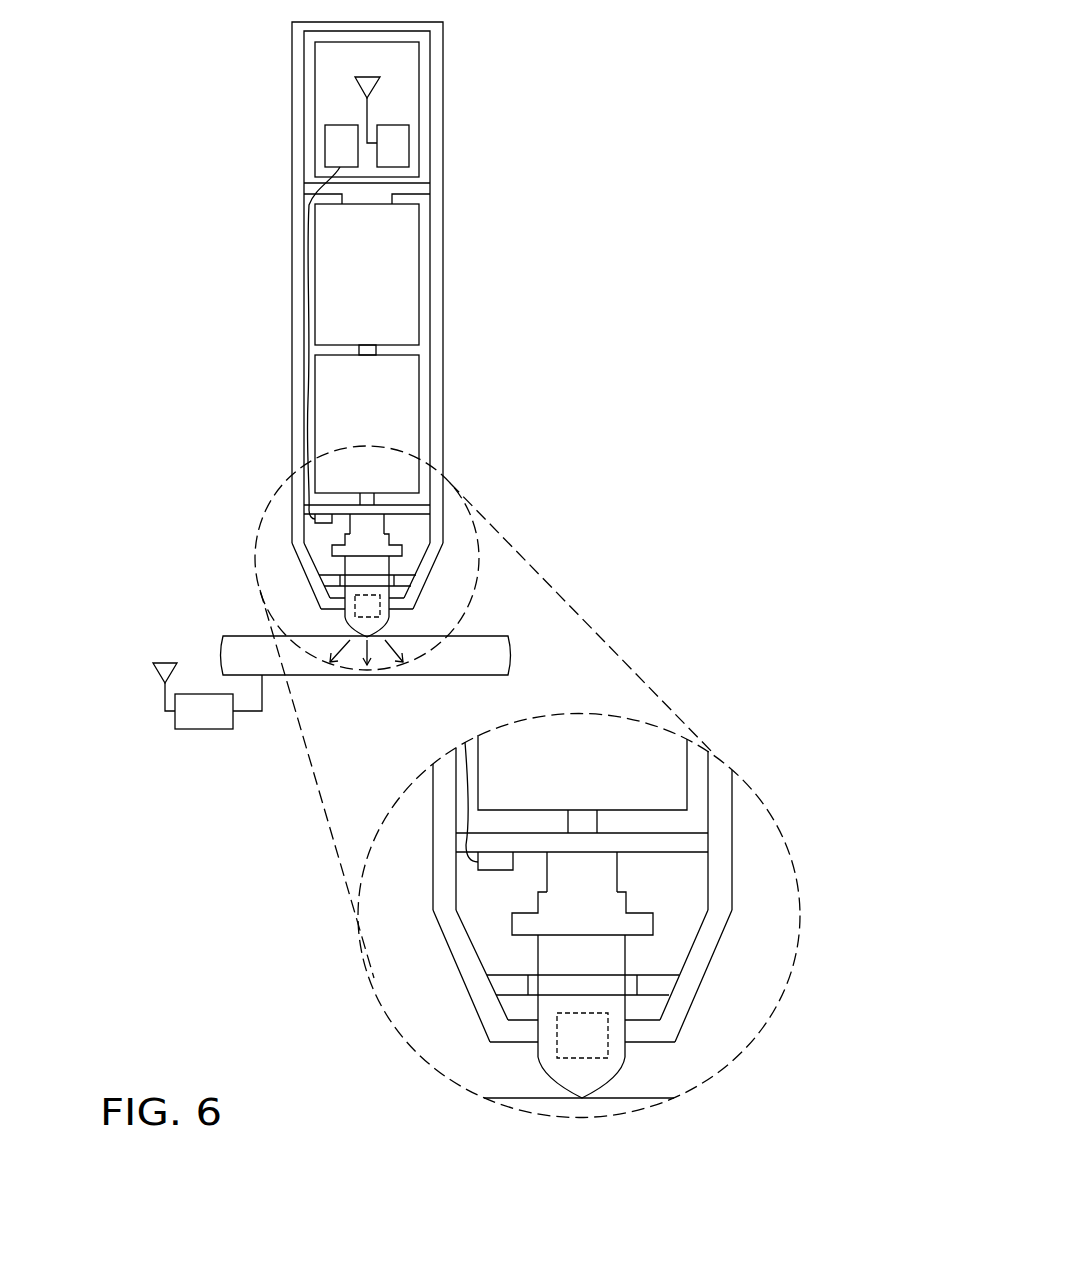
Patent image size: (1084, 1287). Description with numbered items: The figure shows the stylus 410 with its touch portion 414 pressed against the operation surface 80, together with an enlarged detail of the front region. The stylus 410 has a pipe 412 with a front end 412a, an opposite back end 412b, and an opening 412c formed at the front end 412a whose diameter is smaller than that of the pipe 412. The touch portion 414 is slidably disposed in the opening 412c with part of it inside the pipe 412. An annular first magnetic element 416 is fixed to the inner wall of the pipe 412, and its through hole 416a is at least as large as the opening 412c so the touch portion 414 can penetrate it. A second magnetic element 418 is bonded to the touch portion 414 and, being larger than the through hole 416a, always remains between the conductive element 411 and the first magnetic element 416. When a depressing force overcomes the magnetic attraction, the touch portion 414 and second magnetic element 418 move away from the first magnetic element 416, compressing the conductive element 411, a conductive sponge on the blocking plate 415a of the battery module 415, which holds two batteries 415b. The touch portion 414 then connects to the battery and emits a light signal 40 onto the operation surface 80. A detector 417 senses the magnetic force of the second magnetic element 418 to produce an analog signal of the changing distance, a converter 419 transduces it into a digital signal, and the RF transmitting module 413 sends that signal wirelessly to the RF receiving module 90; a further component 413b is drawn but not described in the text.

The stylus 410 is at (270, 292).
The pipe 412 is at (437, 278).
The front end 412a is at (460, 976).
The back end 412b is at (458, 29).
The opening 412c is at (560, 1080).
The RF transmitting module 413 is at (395, 148).
The sensing unit 413b is at (548, 1028).
The touch portion 414 is at (597, 1072).
The battery module 415 is at (367, 279).
The blocking plate 415a is at (688, 843).
The battery 415b is at (400, 425).
The first magnetic element 416 is at (658, 985).
The through hole 416a is at (535, 985).
The detector 417 is at (497, 862).
The second magnetic element 418 is at (650, 922).
The converter 419 is at (342, 148).
The conductive element 411 is at (557, 862).
The operation surface 80 is at (250, 655).
The RF receiving module 90 is at (195, 718).
The light signal 40 is at (362, 652).